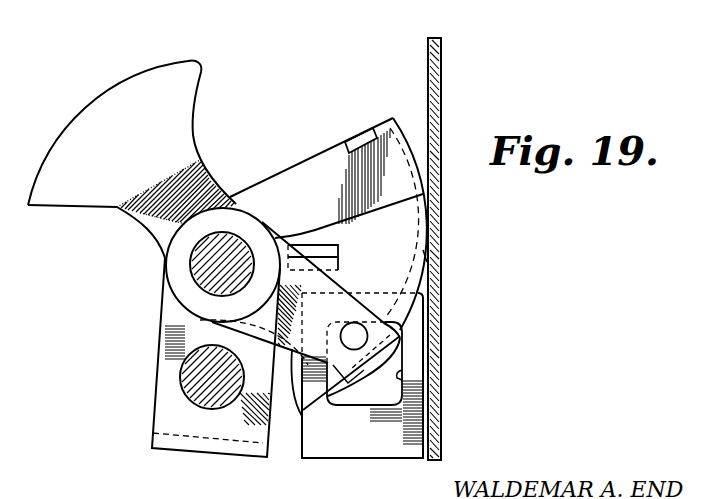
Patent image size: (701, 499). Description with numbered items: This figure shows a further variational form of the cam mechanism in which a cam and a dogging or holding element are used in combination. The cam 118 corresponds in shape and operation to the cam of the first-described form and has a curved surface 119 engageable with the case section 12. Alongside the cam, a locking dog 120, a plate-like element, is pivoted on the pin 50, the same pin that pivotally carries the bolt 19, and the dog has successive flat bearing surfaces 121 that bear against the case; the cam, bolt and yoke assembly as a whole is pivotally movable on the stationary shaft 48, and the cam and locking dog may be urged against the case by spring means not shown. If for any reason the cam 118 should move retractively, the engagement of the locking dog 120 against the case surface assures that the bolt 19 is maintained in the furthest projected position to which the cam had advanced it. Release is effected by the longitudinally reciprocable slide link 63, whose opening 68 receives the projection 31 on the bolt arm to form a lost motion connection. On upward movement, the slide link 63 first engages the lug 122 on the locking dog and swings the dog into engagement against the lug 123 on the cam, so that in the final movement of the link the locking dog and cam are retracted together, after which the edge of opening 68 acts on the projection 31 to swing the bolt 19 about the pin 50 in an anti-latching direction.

The case section 12 is at (438, 88).
The bolt 19 is at (197, 72).
The projection 31 is at (360, 337).
The stationary shaft 48 is at (183, 380).
The pin 50 is at (190, 270).
The slide link 63 is at (353, 440).
The opening 68 is at (398, 383).
The cam 118 is at (310, 163).
The curved surface 119 is at (413, 153).
The locking dog 120 is at (395, 240).
The flat bearing surfaces 121 is at (440, 261).
The lug 122 is at (313, 247).
The lug 123 is at (362, 140).